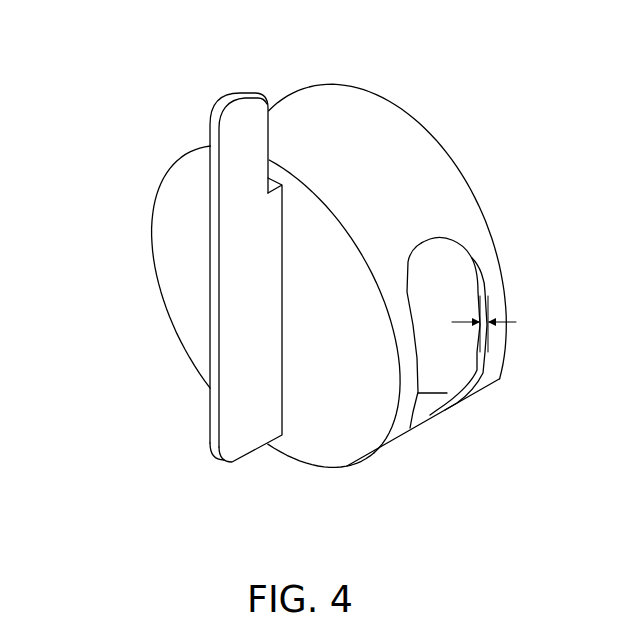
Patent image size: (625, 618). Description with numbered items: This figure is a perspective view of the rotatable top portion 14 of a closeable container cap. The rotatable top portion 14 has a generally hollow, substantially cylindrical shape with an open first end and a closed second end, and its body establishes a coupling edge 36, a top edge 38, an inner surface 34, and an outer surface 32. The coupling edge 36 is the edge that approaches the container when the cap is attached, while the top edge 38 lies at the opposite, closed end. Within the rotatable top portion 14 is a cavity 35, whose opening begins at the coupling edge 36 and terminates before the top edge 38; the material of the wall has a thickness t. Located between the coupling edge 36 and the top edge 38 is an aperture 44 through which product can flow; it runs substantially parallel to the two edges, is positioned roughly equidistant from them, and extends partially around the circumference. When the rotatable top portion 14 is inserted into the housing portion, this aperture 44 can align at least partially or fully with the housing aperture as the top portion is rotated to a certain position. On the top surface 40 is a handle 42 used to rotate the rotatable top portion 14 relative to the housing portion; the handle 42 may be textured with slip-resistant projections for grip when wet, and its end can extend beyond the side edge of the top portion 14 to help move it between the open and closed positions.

The rotatable top portion 14 is at (510, 93).
The outer surface 32 is at (330, 103).
The inner surface 34 is at (430, 398).
The cavity 35 is at (435, 337).
The coupling edge 36 is at (385, 100).
The top edge 38 is at (347, 466).
The top surface 40 is at (187, 292).
The handle 42 is at (213, 405).
The aperture 44 is at (455, 258).